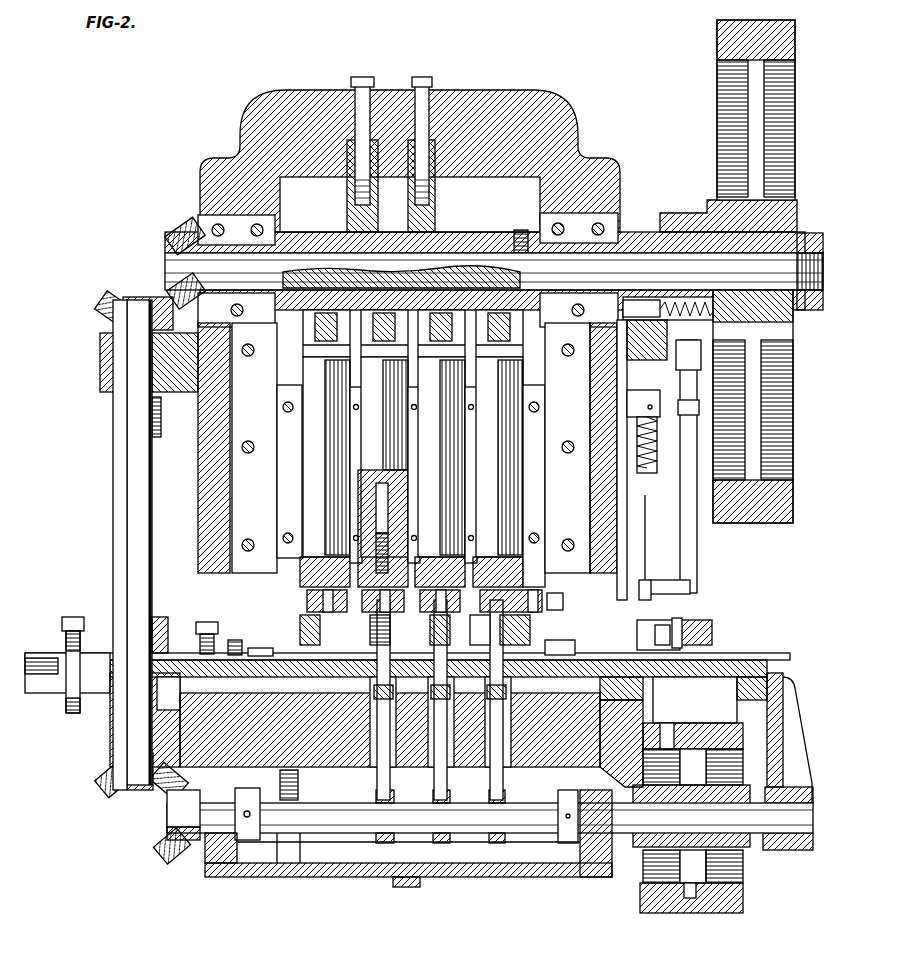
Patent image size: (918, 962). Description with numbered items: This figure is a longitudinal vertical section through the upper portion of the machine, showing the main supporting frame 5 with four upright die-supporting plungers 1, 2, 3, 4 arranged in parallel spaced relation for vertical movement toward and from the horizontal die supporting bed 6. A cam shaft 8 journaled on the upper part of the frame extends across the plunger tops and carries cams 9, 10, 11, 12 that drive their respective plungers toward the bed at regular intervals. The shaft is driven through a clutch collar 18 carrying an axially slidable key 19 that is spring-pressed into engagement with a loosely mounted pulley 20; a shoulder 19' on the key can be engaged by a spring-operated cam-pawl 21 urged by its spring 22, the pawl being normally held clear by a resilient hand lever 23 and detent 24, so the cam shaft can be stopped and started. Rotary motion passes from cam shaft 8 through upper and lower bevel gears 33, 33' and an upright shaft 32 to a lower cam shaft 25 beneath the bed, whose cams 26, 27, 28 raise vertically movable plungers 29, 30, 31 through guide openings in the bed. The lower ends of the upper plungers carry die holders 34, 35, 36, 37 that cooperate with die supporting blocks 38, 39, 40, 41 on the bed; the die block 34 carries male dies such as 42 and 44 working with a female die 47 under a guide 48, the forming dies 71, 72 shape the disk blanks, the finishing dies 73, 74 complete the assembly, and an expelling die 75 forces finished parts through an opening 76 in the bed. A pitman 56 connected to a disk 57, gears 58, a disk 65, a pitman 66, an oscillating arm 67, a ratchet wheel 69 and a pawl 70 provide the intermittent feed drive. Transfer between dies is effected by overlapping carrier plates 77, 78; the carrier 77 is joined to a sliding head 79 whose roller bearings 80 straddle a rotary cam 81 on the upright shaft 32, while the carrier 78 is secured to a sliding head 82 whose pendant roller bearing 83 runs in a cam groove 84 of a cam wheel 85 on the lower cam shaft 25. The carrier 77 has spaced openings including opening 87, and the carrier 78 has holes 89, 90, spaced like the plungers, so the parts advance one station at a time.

The die-supporting plunger 1 is at (331, 448).
The die-supporting plunger 2 is at (389, 448).
The die-supporting plunger 3 is at (30, 653).
The die-supporting plunger 4 is at (498, 448).
The main supporting frame 5 is at (198, 503).
The die supporting bed 6 is at (165, 718).
The cam shaft 8 is at (642, 265).
The cam 9 is at (326, 232).
The cam 10 is at (372, 154).
The cam 11 is at (434, 154).
The cam 12 is at (514, 236).
The clutch collar 18 is at (681, 232).
The axially slidable key 19 is at (753, 406).
The shoulder 19' is at (674, 292).
The pulley 20 is at (717, 95).
The cam-pawl 21 is at (650, 404).
The spring 22 is at (657, 473).
The hand lever 23 is at (670, 577).
The detent 24 is at (639, 583).
The cam shaft 25 is at (343, 833).
The cam 26 is at (384, 843).
The cam 27 is at (441, 843).
The cam 28 is at (497, 843).
The vertically movable plunger 29 is at (385, 816).
The vertically movable plunger 30 is at (442, 816).
The vertically movable plunger 31 is at (498, 816).
The upright shaft 32 is at (135, 543).
The bevel gears 33 is at (150, 273).
The bevel gears 33' is at (147, 808).
The die holder 34 is at (306, 614).
The die holder 35 is at (372, 608).
The die holder 36 is at (381, 625).
The die holder 37 is at (448, 607).
The die supporting block 38 is at (300, 775).
The die supporting block 39 is at (377, 770).
The die supporting block 40 is at (434, 770).
The die supporting block 41 is at (490, 770).
The male die 42 is at (447, 632).
The male die 44 is at (300, 630).
The female die 47 is at (284, 630).
The guide 48 is at (343, 644).
The pitman 56 is at (118, 507).
The disk 57 is at (166, 426).
The gears 58 is at (299, 230).
The disk 65 is at (672, 430).
The pitman 66 is at (697, 551).
The oscillating arm 67 is at (712, 630).
The ratchet wheel 69 is at (690, 628).
The pawl 70 is at (658, 625).
The male forming die 71 is at (373, 630).
The female forming die 72 is at (359, 647).
The male die 73 is at (511, 617).
The female die 74 is at (526, 649).
The expelling die 75 is at (563, 620).
The opening 76 is at (590, 735).
The carrier plate 77 is at (255, 648).
The carrier plate 78 is at (564, 649).
The sliding head 79 is at (233, 640).
The roller bearings 80 is at (66, 622).
The rotary cam 81 is at (160, 617).
The sliding head 82 is at (599, 651).
The pendant roller bearing 83 is at (670, 727).
The cam groove 84 is at (692, 913).
The cam wheel 85 is at (722, 913).
The opening 87 is at (434, 630).
The opening 89 is at (474, 630).
The opening 90 is at (513, 649).